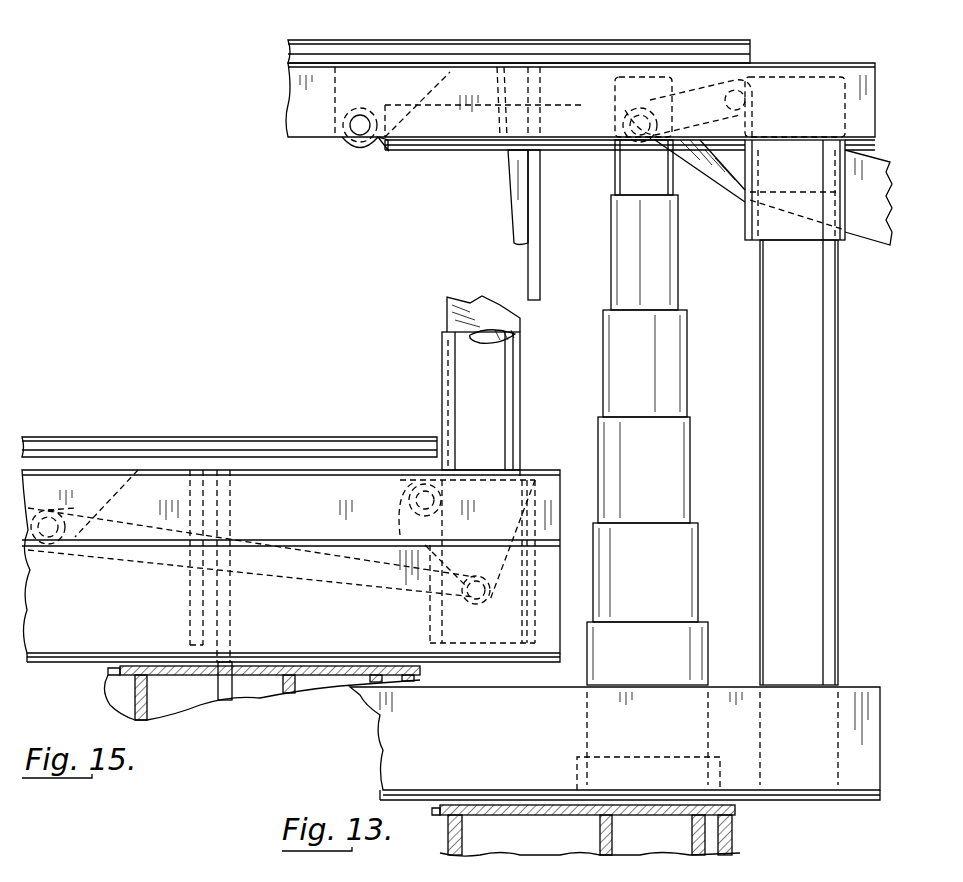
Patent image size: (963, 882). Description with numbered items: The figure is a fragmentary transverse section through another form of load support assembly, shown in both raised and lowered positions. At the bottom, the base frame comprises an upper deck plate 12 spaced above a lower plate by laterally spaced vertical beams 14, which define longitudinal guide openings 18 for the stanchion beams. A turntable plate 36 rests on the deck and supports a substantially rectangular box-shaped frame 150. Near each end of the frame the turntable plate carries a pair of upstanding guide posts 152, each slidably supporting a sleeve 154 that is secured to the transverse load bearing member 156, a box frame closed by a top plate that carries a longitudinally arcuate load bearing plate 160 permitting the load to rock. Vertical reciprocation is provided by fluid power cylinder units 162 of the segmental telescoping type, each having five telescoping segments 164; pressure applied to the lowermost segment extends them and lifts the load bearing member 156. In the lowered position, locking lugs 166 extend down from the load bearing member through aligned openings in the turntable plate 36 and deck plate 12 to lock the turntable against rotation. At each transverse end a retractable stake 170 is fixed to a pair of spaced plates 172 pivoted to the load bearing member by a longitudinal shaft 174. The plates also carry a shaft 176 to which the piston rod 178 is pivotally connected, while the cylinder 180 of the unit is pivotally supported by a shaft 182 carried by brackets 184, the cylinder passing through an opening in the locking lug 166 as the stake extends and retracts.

In FIG. 13, the upper deck plate 12 is at (740, 806).
In FIG. 15, the upper deck plate 12 is at (190, 676).
In FIG. 13, the vertical beams 14 is at (690, 832).
In FIG. 15, the vertical beams 14 is at (296, 690).
In FIG. 13, the longitudinal guide openings 18 is at (490, 825).
In FIG. 15, the longitudinal guide openings 18 is at (205, 705).
In FIG. 13, the turntable plate 36 is at (825, 800).
In FIG. 15, the turntable plate 36 is at (38, 664).
In FIG. 13, the box-shaped frame 150 is at (853, 695).
In FIG. 15, the box-shaped frame 150 is at (83, 640).
In FIG. 13, the guide posts 152 is at (765, 452).
In FIG. 15, the guide posts 152 is at (460, 385).
In FIG. 13, the sleeve 154 is at (746, 228).
In FIG. 15, the sleeve 154 is at (535, 480).
In FIG. 13, the load bearing member 156 is at (300, 80).
In FIG. 15, the load bearing member 156 is at (300, 468).
In FIG. 13, the load bearing plate 160 is at (315, 42).
In FIG. 15, the load bearing plate 160 is at (183, 437).
In FIG. 13, the fluid power cylinder units 162 is at (663, 412).
In FIG. 13, the telescoping segments 164 is at (678, 392).
In FIG. 13, the locking lugs 166 is at (542, 268).
In FIG. 15, the locking lugs 166 is at (234, 692).
In FIG. 13, the retractable stake 170 is at (838, 232).
In FIG. 15, the retractable stake 170 is at (445, 312).
In FIG. 13, the spaced plates 172 is at (713, 170).
In FIG. 13, the longitudinally extending shaft 174 is at (735, 108).
In FIG. 13, the shaft 176 is at (724, 100).
In FIG. 15, the shaft 176 is at (490, 606).
In FIG. 15, the piston rod 178 is at (390, 592).
In FIG. 13, the cylinder 180 is at (437, 146).
In FIG. 15, the cylinder 180 is at (252, 580).
In FIG. 13, the shaft 182 is at (342, 132).
In FIG. 13, the brackets 184 is at (355, 152).